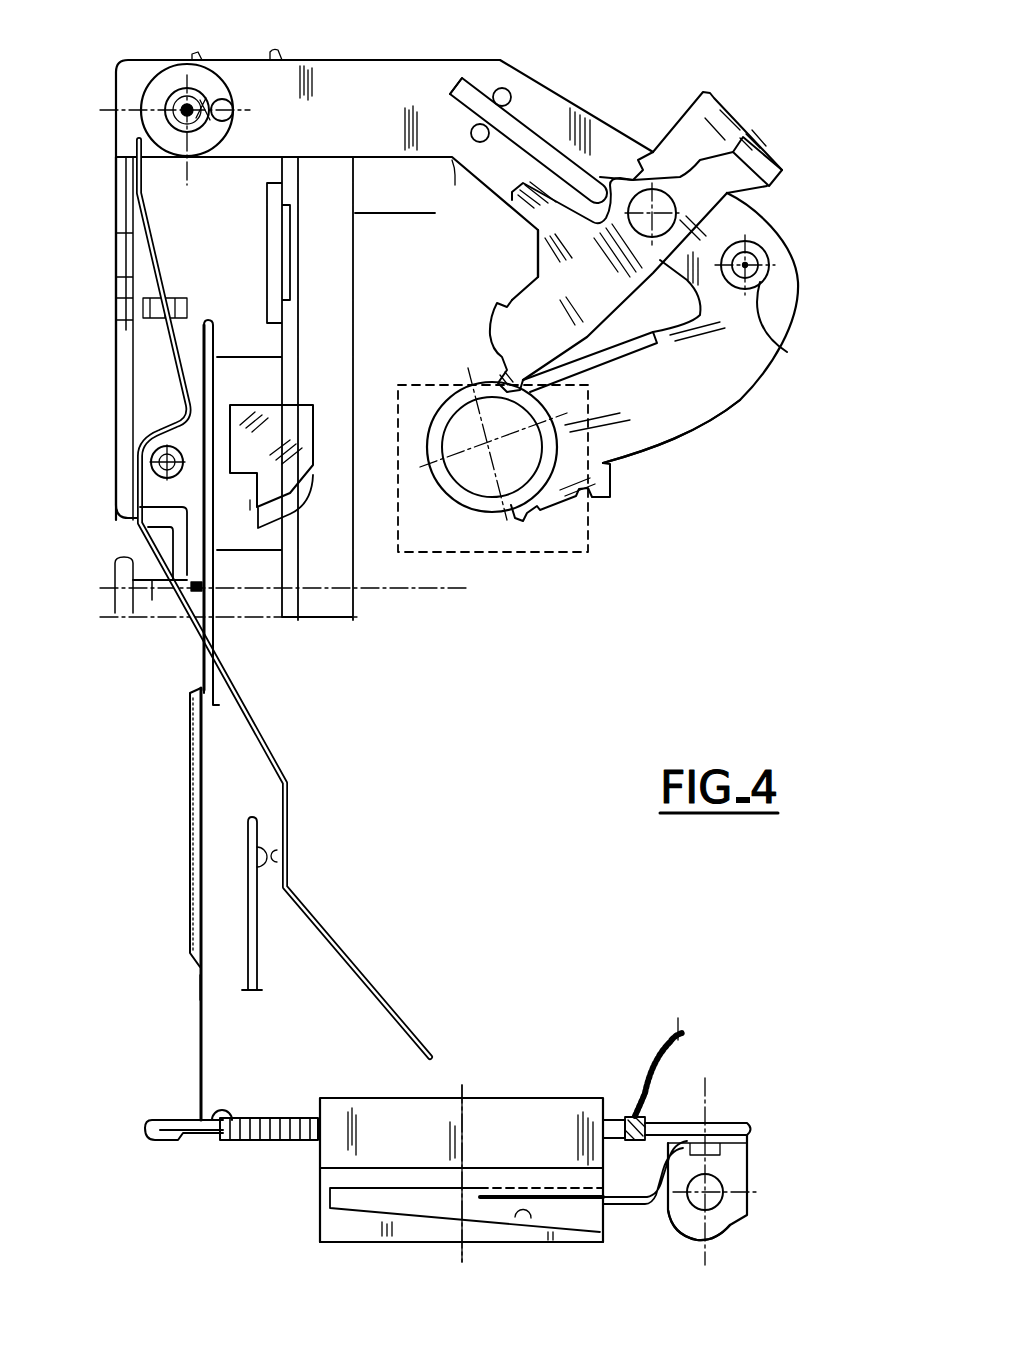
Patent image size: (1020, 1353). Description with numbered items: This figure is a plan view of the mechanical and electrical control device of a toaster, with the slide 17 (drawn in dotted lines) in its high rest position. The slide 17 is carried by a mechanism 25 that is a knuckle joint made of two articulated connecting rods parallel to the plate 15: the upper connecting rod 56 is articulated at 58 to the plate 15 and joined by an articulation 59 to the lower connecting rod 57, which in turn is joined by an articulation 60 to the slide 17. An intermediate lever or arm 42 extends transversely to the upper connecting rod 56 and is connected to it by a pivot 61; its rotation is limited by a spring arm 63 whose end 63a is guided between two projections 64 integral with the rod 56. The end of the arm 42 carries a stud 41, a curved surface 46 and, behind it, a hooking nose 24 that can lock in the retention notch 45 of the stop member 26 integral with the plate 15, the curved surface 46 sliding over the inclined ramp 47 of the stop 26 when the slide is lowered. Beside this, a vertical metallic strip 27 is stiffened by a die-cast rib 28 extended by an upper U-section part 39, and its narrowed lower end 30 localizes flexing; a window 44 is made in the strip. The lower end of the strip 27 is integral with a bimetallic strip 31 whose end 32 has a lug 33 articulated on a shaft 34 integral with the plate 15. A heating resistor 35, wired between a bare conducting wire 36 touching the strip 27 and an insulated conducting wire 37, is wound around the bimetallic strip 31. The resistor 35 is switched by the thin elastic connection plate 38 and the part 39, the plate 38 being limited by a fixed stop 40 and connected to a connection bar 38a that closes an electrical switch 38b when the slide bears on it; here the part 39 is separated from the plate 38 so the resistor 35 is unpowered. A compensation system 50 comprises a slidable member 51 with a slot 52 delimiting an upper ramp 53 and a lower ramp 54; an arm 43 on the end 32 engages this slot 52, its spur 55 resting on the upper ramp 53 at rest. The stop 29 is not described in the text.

The plate 15 is at (187, 228).
The slide 17 is at (545, 553).
The nose 24 is at (515, 292).
The mechanism 25 is at (606, 98).
The stop member 26 is at (303, 423).
The metallic strip 27 is at (192, 1004).
The die-cast rib 28 is at (193, 827).
The stop 29 is at (215, 540).
The lower end 30 is at (200, 1097).
The bimetallic strip 31 is at (202, 1142).
The end 32 is at (727, 1123).
The lug 33 is at (727, 1225).
The shaft 34 is at (713, 1193).
The electrical heating resistor 35 is at (271, 1140).
The bare conducting wire 36 is at (222, 1108).
The insulated conducting wire 37 is at (640, 1060).
The thin elastic connection plate 38 is at (150, 372).
The connection bar 38a is at (290, 778).
The electrical switch 38b is at (288, 846).
The upper U-section part 39 is at (208, 322).
The fixed stop 40 is at (148, 488).
The stud 41 is at (490, 478).
The arm 42 is at (620, 340).
The arm 43 is at (630, 1205).
The window 44 is at (205, 635).
The retention notch 45 is at (257, 497).
The curved surface 46 is at (490, 322).
The inclined ramp 47 is at (303, 482).
The compensation system 50 is at (345, 1232).
The member 51 is at (437, 1113).
The slot 52 is at (443, 1207).
The upper ramp 53 is at (423, 1192).
The lower ramp 54 is at (533, 1227).
The spur 55 is at (480, 1192).
The upper connecting rod 56 is at (352, 74).
The lower connecting rod 57 is at (645, 425).
The articulation 58 is at (175, 78).
The articulation 59 is at (785, 350).
The articulation 60 is at (490, 478).
The pivot 61 is at (736, 150).
The spring arm 63 is at (540, 112).
The end 63a is at (462, 88).
The projections 64 is at (504, 88).